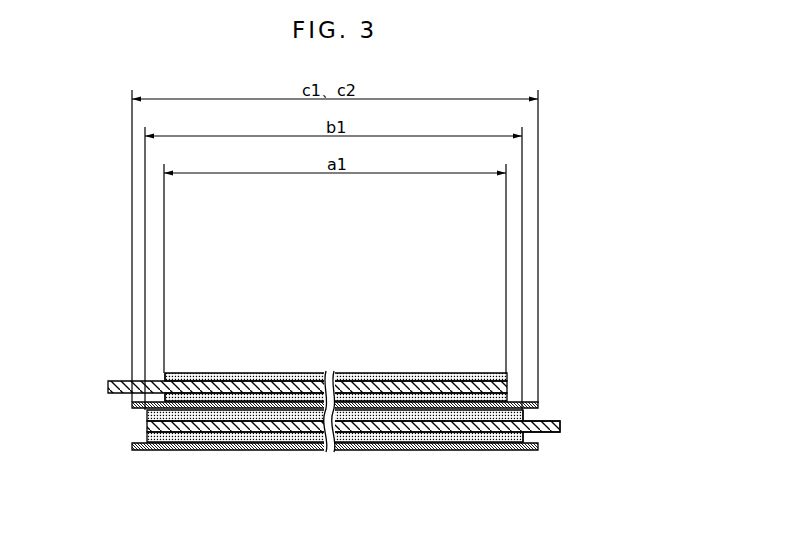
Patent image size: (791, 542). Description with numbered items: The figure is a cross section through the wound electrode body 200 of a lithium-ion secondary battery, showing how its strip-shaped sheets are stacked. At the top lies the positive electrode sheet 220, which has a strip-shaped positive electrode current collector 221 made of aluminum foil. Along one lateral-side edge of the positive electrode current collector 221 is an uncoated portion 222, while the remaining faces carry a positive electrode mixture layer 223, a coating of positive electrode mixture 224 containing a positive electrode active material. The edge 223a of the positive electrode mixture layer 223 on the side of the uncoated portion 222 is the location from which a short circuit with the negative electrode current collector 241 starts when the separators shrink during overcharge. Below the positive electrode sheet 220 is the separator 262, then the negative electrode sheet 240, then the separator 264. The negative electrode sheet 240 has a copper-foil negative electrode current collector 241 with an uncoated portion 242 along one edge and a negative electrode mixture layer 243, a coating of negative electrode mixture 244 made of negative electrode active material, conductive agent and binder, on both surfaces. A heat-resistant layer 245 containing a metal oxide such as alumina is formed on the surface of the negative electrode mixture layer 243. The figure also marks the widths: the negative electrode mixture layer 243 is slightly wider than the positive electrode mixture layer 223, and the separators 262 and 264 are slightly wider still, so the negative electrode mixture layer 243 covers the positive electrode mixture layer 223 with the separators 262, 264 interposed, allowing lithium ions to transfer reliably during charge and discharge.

The wound electrode body 200 is at (235, 458).
The positive electrode sheet 220 is at (101, 386).
The positive electrode current collector 221 is at (421, 389).
The uncoated portion 222 is at (108, 385).
The positive electrode mixture layer 223 is at (204, 376).
The edge of the positive electrode mixture layer 223a is at (167, 375).
The positive electrode mixture 224 is at (305, 397).
The negative electrode sheet 240 is at (574, 435).
The negative electrode current collector 241 is at (272, 431).
The uncoated portion 242 is at (558, 418).
The negative electrode mixture layer 243 is at (412, 437).
The negative electrode mixture 244 is at (467, 406).
The heat-resistant layer 245 is at (502, 452).
The separator 262 is at (140, 408).
The separator 264 is at (137, 451).